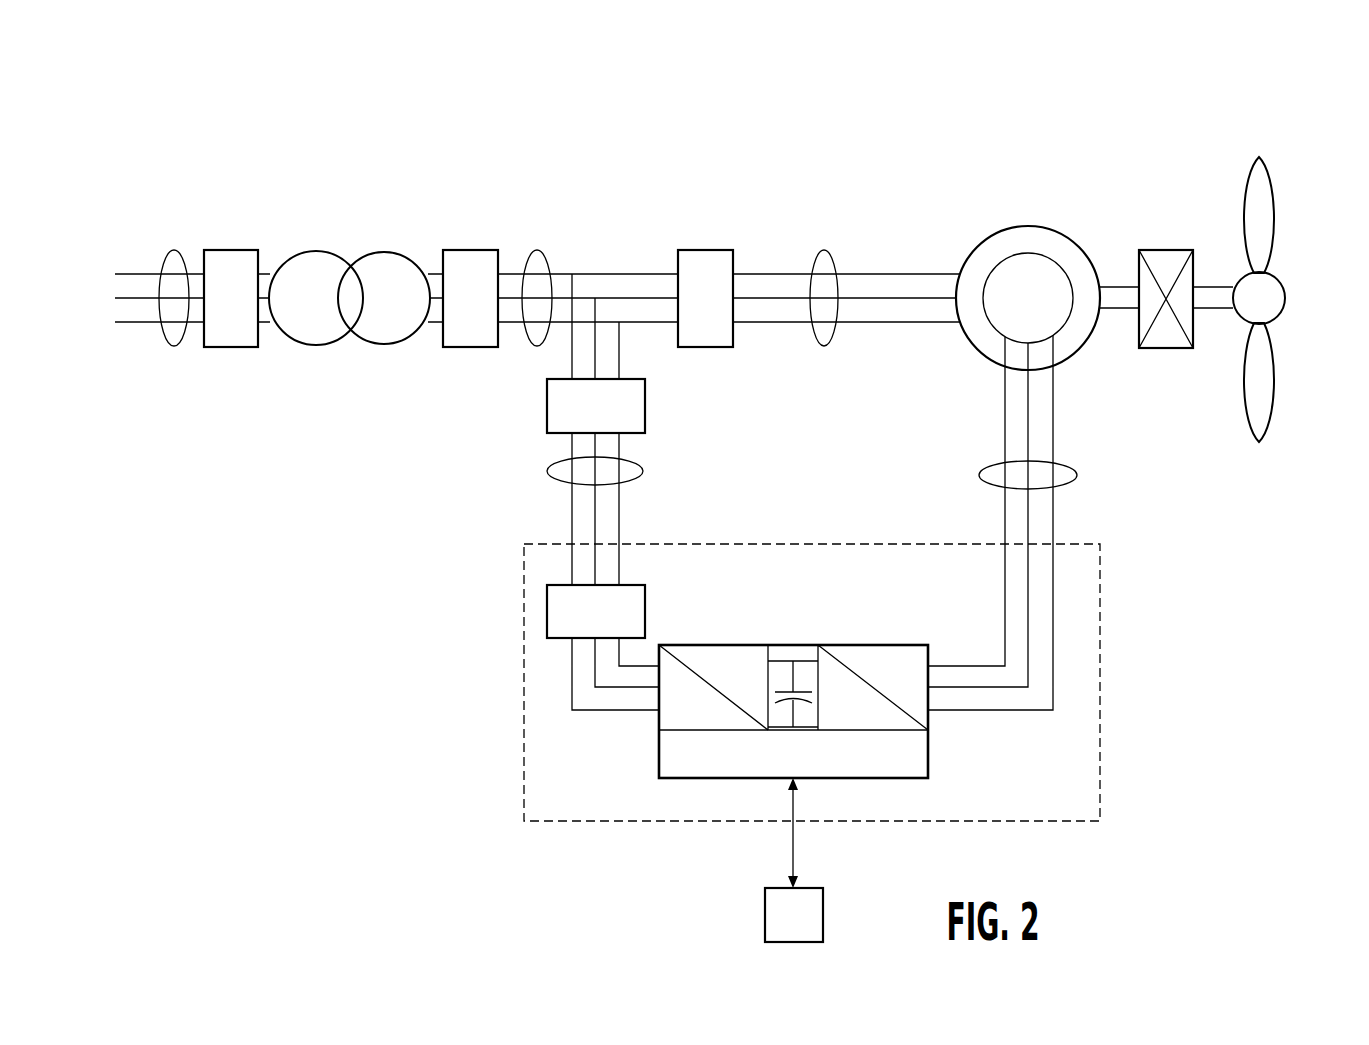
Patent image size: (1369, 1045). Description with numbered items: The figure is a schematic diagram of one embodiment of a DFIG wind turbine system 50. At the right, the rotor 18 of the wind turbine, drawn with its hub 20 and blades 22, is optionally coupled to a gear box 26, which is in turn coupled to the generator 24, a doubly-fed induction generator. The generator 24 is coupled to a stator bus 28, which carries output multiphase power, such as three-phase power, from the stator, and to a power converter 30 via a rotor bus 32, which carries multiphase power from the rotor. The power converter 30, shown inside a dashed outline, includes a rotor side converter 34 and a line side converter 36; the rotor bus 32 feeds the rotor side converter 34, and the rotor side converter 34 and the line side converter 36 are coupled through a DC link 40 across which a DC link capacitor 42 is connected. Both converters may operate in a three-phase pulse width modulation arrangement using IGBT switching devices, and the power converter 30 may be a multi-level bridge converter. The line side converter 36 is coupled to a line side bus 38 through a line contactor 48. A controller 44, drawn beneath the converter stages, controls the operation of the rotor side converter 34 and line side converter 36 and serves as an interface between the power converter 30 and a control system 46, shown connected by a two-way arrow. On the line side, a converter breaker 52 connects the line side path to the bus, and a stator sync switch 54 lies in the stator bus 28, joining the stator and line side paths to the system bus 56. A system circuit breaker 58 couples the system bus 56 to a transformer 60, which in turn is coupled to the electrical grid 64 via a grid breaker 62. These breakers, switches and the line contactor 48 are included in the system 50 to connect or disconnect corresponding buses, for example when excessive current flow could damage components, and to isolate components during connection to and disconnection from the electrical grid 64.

The rotor 18 is at (1250, 96).
The hub 20 is at (1285, 297).
The rotor blades 22 is at (1275, 207).
The generator 24 is at (1026, 227).
The gear box 26 is at (1155, 250).
The stator bus 28 is at (823, 250).
The power converter 30 is at (1100, 679).
The rotor bus 32 is at (1078, 475).
The rotor side converter 34 is at (930, 722).
The line side converter 36 is at (658, 724).
The line side bus 38 is at (547, 473).
The DC link 40 is at (805, 658).
The DC link capacitor 42 is at (786, 690).
The controller 44 is at (702, 781).
The control system 46 is at (823, 915).
The line contactor 48 is at (547, 625).
The DFIG wind turbine system 50 is at (421, 725).
The converter breaker 52 is at (547, 410).
The stator sync switch 54 is at (694, 250).
The system bus 56 is at (535, 250).
The system circuit breaker 58 is at (458, 250).
The transformer 60 is at (383, 252).
The grid breaker 62 is at (218, 250).
The electrical grid 64 is at (170, 250).